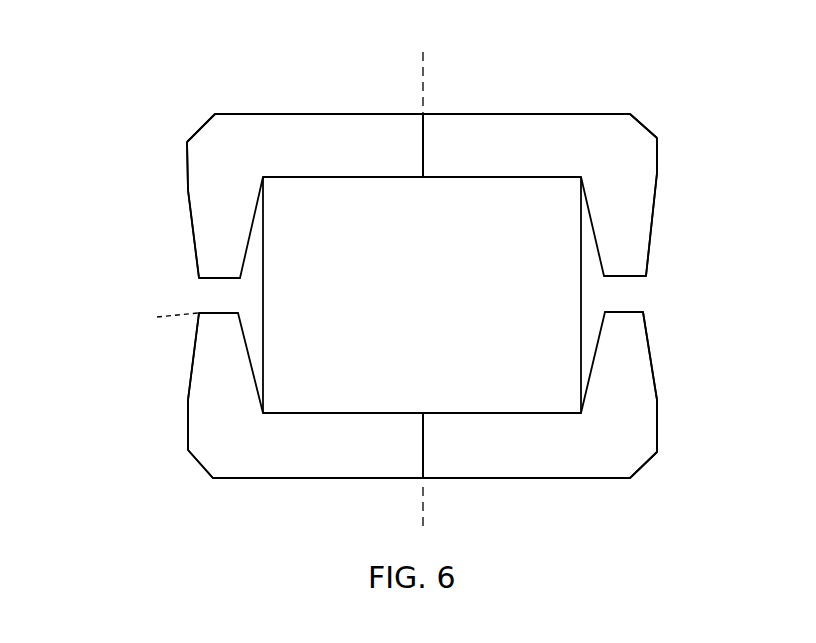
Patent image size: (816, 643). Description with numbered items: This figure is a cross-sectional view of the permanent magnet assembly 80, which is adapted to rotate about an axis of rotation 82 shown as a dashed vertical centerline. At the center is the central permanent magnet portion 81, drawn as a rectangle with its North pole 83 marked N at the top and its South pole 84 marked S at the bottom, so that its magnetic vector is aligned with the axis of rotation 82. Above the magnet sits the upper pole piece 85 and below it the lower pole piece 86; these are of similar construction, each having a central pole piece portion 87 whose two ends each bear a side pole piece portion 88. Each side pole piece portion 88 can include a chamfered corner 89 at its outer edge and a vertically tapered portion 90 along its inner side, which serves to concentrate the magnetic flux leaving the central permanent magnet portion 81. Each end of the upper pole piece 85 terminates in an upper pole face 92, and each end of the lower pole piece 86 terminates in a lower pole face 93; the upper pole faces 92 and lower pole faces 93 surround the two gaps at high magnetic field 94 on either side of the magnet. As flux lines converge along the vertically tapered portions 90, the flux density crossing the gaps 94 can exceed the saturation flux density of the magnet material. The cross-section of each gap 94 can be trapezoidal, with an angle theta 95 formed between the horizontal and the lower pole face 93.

The permanent magnet assembly 80 is at (181, 76).
The central permanent magnet portion 81 is at (333, 198).
The axis of rotation 82 is at (425, 57).
The North pole 83 is at (437, 193).
The South pole 84 is at (433, 402).
The upper pole piece 85 is at (445, 130).
The lower pole piece 86 is at (477, 463).
The central pole piece portion 87 is at (383, 133).
The side pole piece portion 88 is at (217, 182).
The chamfered corner 89 is at (198, 127).
The vertically tapered portion 90 is at (190, 222).
The upper pole face 92 is at (207, 280).
The lower pole face 93 is at (200, 313).
The gap at high magnetic field 94 is at (217, 302).
The angle theta 95 is at (138, 323).